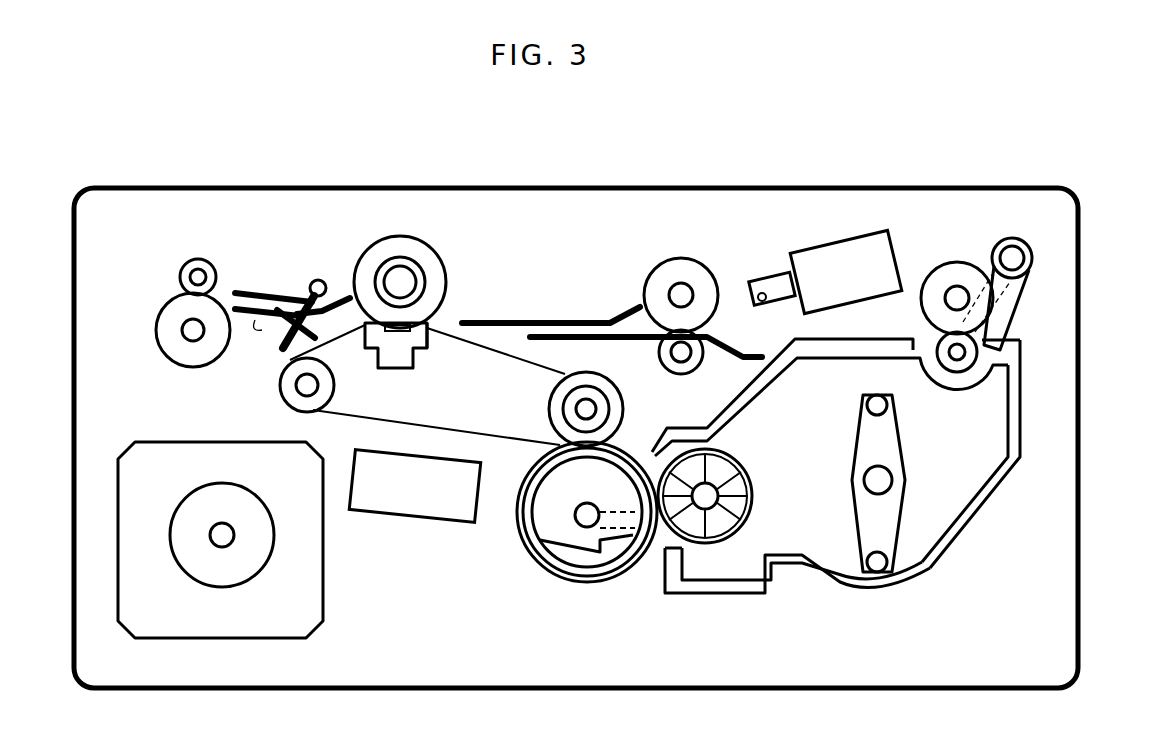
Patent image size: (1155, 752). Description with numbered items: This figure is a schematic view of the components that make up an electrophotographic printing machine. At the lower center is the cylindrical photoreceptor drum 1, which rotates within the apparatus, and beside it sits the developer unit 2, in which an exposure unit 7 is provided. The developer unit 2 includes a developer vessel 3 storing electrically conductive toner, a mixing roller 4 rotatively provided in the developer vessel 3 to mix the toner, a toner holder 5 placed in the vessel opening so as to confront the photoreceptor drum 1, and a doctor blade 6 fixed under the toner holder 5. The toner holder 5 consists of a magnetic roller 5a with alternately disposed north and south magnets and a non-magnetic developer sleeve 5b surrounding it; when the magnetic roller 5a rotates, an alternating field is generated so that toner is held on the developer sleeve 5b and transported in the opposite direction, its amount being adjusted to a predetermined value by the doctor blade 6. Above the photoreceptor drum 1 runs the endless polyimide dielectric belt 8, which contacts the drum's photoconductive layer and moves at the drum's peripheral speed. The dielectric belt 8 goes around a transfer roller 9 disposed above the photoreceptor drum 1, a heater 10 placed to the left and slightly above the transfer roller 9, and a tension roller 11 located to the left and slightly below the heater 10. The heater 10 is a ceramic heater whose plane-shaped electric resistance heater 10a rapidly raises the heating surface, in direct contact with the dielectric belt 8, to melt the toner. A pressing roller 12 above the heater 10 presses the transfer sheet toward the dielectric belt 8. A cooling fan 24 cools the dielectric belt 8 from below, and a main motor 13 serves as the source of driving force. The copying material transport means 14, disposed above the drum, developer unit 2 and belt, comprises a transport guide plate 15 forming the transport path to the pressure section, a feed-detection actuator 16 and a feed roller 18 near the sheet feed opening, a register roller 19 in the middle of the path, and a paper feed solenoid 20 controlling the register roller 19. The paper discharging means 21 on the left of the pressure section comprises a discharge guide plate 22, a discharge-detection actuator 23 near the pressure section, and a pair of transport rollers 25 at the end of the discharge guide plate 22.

The photoreceptor drum 1 is at (545, 572).
The developer unit 2 is at (834, 588).
The developer vessel 3 is at (985, 512).
The mixing roller 4 is at (888, 545).
The toner holder 5 is at (740, 458).
The magnetic roller 5a is at (720, 532).
The developer sleeve 5b is at (692, 545).
The doctor blade 6 is at (758, 594).
The exposure unit 7 is at (617, 524).
The dielectric belt 8 is at (332, 418).
The transfer roller 9 is at (550, 408).
The heater 10 is at (400, 349).
The electric resistance heater 10a is at (432, 325).
The tension roller 11 is at (280, 385).
The pressing roller 12 is at (410, 248).
The main motor 13 is at (302, 620).
The copying material transport means 14 is at (680, 228).
The transport guide plate 15 is at (576, 337).
The feed-detection actuator 16 is at (1013, 292).
The feed roller 18 is at (985, 305).
The register roller 19 is at (715, 345).
The paper feed solenoid 20 is at (850, 253).
The paper discharging means 21 is at (216, 234).
The discharge guide plate 22 is at (253, 290).
The discharge-detection actuator 23 is at (324, 282).
The cooling fan 24 is at (441, 505).
The pair of transport rollers 25 is at (180, 280).